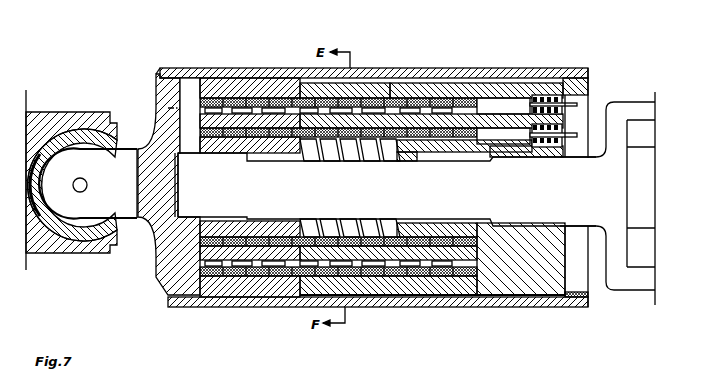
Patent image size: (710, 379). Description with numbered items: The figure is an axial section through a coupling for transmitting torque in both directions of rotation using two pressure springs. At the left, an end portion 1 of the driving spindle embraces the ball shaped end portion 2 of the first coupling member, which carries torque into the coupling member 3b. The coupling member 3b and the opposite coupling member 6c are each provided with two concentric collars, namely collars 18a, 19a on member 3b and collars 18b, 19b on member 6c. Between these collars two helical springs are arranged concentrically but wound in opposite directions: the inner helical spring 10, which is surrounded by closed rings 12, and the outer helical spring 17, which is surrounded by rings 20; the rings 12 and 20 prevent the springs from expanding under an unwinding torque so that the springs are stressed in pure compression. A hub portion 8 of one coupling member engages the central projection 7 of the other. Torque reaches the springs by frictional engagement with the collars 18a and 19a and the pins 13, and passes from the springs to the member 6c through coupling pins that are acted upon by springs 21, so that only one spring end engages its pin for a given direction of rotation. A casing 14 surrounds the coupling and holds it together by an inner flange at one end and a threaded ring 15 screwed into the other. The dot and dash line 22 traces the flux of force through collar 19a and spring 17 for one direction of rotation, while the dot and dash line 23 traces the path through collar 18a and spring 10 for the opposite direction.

The end portion of the driving spindle 1 is at (45, 124).
The ball shaped end portion 2 is at (77, 155).
The coupling member 3b is at (167, 133).
The pins 13 is at (193, 100).
The hub portion 8 is at (255, 147).
The inner helical spring 10 is at (305, 96).
The closed rings 12 is at (333, 127).
The outer helical spring 17 is at (370, 120).
The rings 20 is at (408, 95).
The springs 21 is at (546, 140).
The coupling member 6c is at (563, 120).
The dot and dash line 22 is at (137, 167).
The dot and dash line 23 is at (137, 189).
The central projection 7 is at (350, 185).
The collar 18a is at (213, 253).
The collar 19a is at (258, 282).
The collar 19b is at (447, 287).
The collar 18b is at (480, 260).
The casing 14 is at (527, 302).
The threaded ring 15 is at (573, 307).